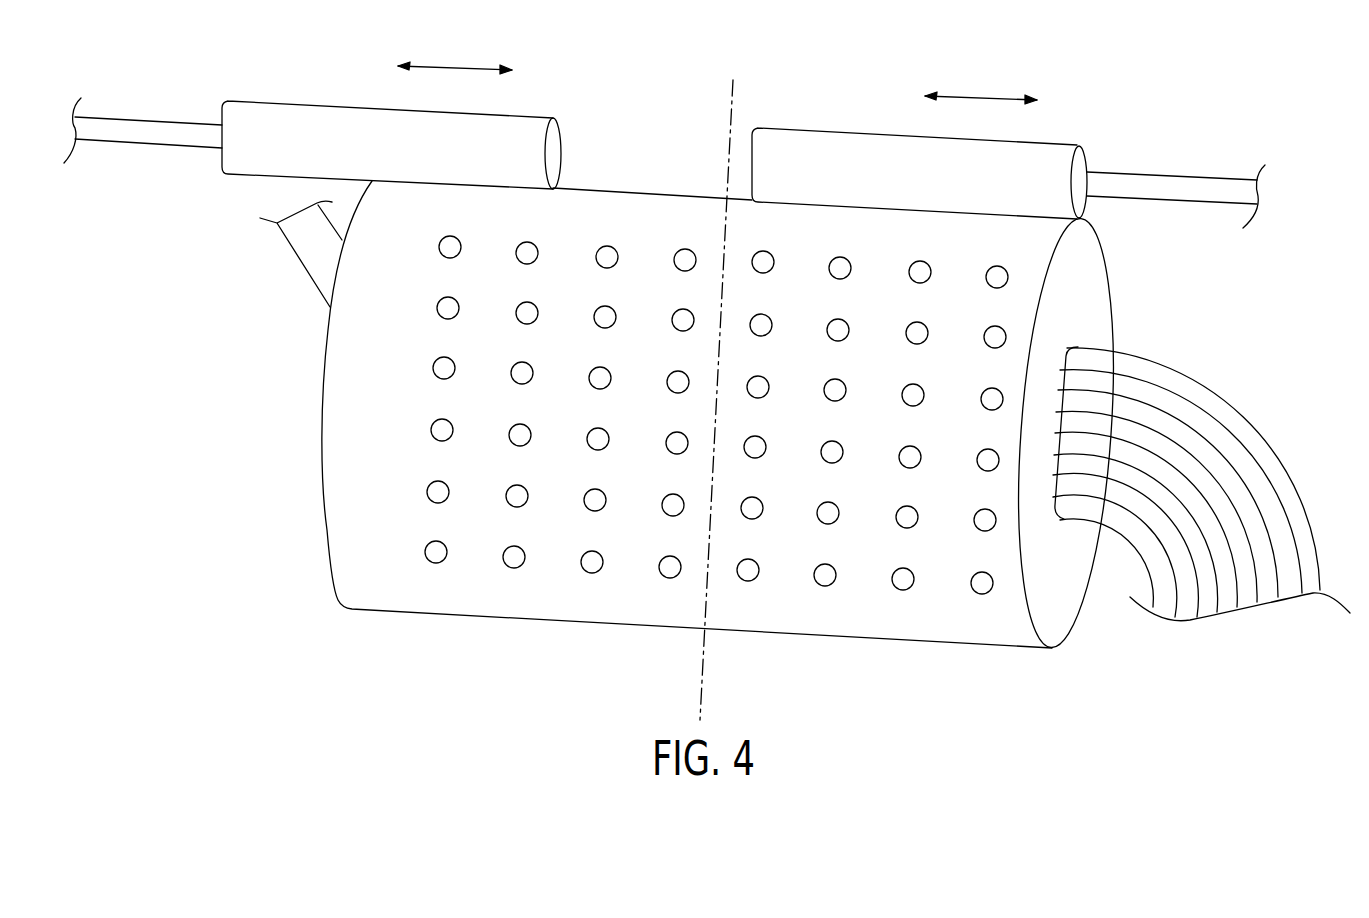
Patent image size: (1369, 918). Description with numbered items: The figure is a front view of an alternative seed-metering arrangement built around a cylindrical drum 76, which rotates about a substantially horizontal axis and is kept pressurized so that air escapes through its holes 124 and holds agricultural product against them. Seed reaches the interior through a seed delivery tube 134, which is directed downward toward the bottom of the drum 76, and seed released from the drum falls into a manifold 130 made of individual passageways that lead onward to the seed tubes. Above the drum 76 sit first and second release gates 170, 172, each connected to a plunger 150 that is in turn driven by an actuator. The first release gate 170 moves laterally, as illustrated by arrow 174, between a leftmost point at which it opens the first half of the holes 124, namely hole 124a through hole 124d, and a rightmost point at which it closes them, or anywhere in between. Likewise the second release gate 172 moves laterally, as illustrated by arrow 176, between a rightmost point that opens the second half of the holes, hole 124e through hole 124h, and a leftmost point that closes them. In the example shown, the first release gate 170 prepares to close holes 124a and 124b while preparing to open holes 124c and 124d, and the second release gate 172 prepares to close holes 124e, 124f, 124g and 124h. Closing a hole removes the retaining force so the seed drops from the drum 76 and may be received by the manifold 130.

The drum 76 is at (347, 553).
The holes 124 is at (514, 557).
The hole 124a is at (450, 247).
The hole 124b is at (527, 253).
The hole 124c is at (607, 257).
The hole 124d is at (685, 260).
The hole 124e is at (763, 262).
The hole 124f is at (840, 268).
The hole 124g is at (920, 272).
The hole 124h is at (997, 277).
The manifold 130 is at (1193, 357).
The seed delivery tube 134 is at (305, 250).
The plungers 150 is at (148, 122).
The first release gate 170 is at (403, 157).
The second release gate 172 is at (941, 183).
The arrow 174 is at (457, 65).
The arrow 176 is at (983, 95).